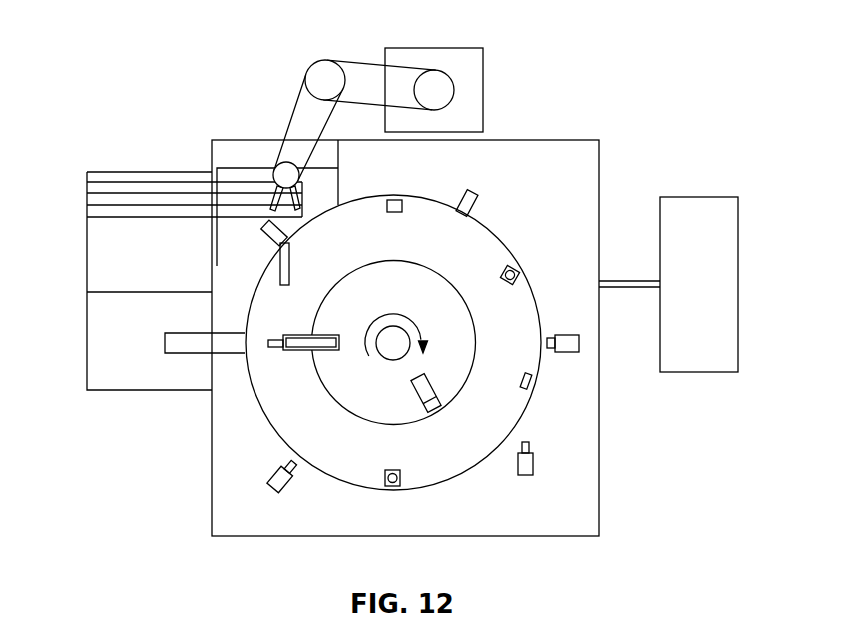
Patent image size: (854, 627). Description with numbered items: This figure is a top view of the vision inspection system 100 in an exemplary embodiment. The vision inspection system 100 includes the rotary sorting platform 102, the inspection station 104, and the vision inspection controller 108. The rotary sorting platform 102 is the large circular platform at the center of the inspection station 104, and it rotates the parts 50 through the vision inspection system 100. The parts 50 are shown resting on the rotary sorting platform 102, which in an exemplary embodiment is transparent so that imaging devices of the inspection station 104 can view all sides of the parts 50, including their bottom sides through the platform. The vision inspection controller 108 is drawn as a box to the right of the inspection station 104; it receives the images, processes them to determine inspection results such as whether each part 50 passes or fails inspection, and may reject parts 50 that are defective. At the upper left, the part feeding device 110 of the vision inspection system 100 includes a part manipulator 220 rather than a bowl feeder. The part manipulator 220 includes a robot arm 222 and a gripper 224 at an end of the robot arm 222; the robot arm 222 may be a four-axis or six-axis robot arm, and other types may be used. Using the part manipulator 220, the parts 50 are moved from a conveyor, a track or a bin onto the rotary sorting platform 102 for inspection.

The vision inspection system 100 is at (150, 88).
The part feeding device 110 is at (308, 111).
The part manipulator 220 is at (283, 113).
The robot arm 222 is at (300, 143).
The gripper 224 is at (273, 203).
The part 50 is at (395, 202).
The rotary sorting platform 102 is at (508, 197).
The inspection station 104 is at (572, 420).
The vision inspection controller 108 is at (699, 197).